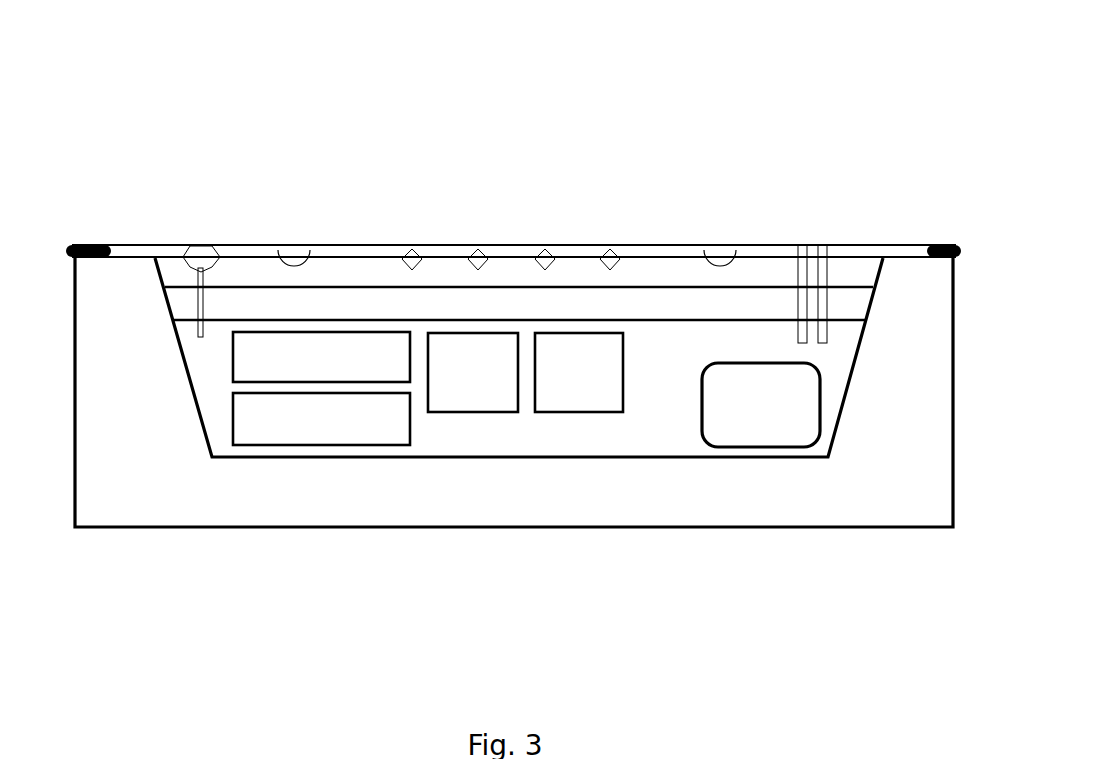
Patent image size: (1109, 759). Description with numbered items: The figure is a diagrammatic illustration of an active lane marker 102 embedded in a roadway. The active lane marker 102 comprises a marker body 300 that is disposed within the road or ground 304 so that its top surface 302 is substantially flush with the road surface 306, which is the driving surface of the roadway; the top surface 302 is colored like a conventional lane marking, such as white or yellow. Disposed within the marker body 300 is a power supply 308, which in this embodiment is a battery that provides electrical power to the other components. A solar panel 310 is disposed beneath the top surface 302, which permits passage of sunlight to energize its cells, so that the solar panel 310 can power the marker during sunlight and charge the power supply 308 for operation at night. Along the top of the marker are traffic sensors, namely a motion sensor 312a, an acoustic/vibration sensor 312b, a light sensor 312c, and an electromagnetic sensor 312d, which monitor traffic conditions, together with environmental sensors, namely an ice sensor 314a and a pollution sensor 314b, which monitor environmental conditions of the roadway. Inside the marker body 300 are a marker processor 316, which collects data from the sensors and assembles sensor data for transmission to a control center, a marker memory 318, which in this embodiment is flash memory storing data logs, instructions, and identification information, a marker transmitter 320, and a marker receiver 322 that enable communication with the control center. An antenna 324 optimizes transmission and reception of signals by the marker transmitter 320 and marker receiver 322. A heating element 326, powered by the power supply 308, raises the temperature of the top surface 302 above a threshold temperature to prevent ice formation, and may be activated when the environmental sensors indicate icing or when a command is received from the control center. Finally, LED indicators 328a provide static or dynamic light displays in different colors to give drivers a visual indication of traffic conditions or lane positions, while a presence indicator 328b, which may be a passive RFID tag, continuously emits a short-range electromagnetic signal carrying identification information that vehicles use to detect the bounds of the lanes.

The active lane marker 102 is at (596, 84).
The marker body 300 is at (632, 447).
The top surface 302 is at (116, 246).
The road or ground 304 is at (116, 502).
The road surface 306 is at (946, 250).
The power supply 308 is at (782, 424).
The solar panel 310 is at (338, 284).
The motion sensor 312a is at (412, 250).
The acoustic/vibration sensor 312b is at (478, 250).
The light sensor 312c is at (545, 250).
The electromagnetic sensor 312d is at (612, 250).
The ice sensor 314a is at (802, 250).
The pollution sensor 314b is at (832, 250).
The marker processor 316 is at (495, 389).
The marker memory 318 is at (599, 389).
The marker transmitter 320 is at (343, 437).
The marker receiver 322 is at (343, 376).
The antenna 324 is at (194, 248).
The heating element 326 is at (248, 316).
The LED indicators 328a is at (292, 252).
The presence indicator 328b is at (719, 252).